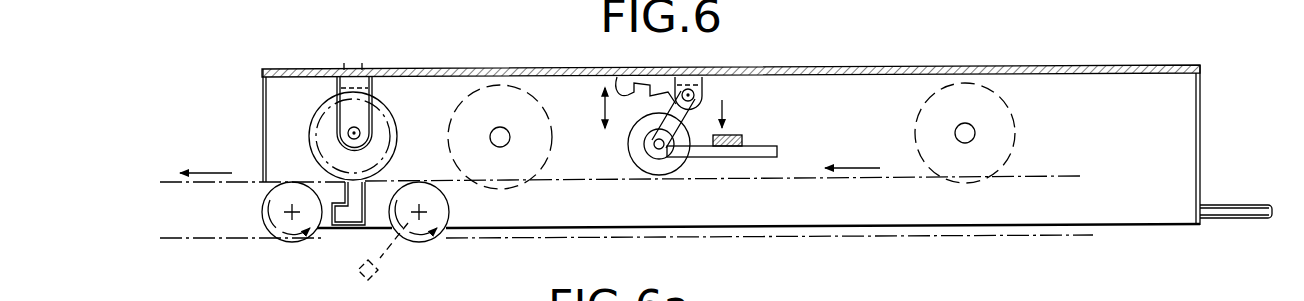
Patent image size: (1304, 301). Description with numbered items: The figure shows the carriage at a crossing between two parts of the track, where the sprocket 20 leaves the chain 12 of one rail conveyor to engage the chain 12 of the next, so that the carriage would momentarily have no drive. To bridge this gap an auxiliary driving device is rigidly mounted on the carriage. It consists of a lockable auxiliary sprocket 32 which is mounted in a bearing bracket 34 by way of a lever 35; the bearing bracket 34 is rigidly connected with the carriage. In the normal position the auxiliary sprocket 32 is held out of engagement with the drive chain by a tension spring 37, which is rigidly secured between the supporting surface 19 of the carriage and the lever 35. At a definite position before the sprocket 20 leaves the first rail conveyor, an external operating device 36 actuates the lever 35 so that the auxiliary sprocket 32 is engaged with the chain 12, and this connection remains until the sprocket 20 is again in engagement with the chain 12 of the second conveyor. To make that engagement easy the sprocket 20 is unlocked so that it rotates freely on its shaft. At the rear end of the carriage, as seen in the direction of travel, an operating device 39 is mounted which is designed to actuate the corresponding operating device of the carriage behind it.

The chain 12 is at (228, 182).
The supporting surface 19 is at (877, 45).
The sprocket 20 is at (391, 112).
The auxiliary sprocket 32 is at (650, 164).
The bearing bracket 34 is at (703, 83).
The lever 35 is at (700, 117).
The operating device 36 is at (745, 143).
The tension spring 37 is at (625, 89).
The operating device 39 is at (1230, 214).